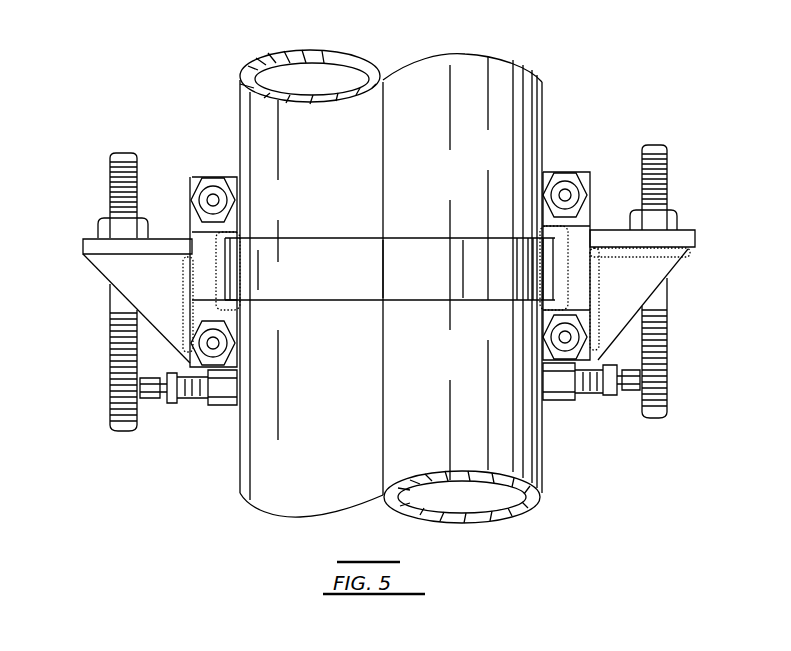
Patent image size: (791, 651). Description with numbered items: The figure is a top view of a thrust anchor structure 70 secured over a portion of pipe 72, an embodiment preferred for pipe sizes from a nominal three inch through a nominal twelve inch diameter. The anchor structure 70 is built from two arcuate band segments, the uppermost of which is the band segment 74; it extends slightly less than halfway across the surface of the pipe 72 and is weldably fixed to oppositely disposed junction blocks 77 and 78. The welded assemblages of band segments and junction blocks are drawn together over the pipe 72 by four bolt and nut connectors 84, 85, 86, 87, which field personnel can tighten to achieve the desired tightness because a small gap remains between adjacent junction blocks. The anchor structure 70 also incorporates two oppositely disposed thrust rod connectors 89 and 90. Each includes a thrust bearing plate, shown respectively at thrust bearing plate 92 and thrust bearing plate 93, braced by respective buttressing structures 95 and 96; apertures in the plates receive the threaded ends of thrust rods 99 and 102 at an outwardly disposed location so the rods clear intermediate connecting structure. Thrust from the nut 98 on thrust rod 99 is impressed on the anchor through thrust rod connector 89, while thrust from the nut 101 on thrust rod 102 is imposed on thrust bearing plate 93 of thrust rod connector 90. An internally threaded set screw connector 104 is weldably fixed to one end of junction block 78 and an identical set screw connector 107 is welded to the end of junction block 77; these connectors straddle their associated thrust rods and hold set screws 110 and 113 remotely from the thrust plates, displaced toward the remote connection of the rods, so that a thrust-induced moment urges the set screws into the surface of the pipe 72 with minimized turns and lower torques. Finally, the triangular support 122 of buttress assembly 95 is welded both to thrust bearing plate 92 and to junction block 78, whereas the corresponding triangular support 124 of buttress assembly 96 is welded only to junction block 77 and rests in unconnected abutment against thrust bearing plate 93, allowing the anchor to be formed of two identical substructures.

The anchor structure 70 is at (615, 114).
The pipe 72 is at (422, 83).
The arcuate band segment 74 is at (405, 262).
The junction block 77 is at (192, 190).
The junction block 78 is at (588, 175).
The bolt and nut connector 84 is at (568, 178).
The bolt and nut connector 85 is at (590, 341).
The bolt and nut connector 86 is at (214, 178).
The bolt and nut connector 87 is at (205, 352).
The thrust rod connector 89 is at (653, 285).
The thrust rod connector 90 is at (121, 287).
The thrust bearing plate 92 is at (687, 237).
The thrust bearing plate 93 is at (83, 250).
The buttressing structure 95 is at (671, 276).
The buttressing structure 96 is at (99, 276).
The nut 98 is at (677, 220).
The thrust rod 99 is at (657, 145).
The nut 101 is at (108, 225).
The thrust rod 102 is at (125, 153).
The set screw connector 104 is at (563, 400).
The set screw connector 107 is at (222, 407).
The set screw 110 is at (610, 393).
The set screw 113 is at (170, 402).
The triangular support 122 is at (658, 268).
The triangular support 124 is at (130, 282).